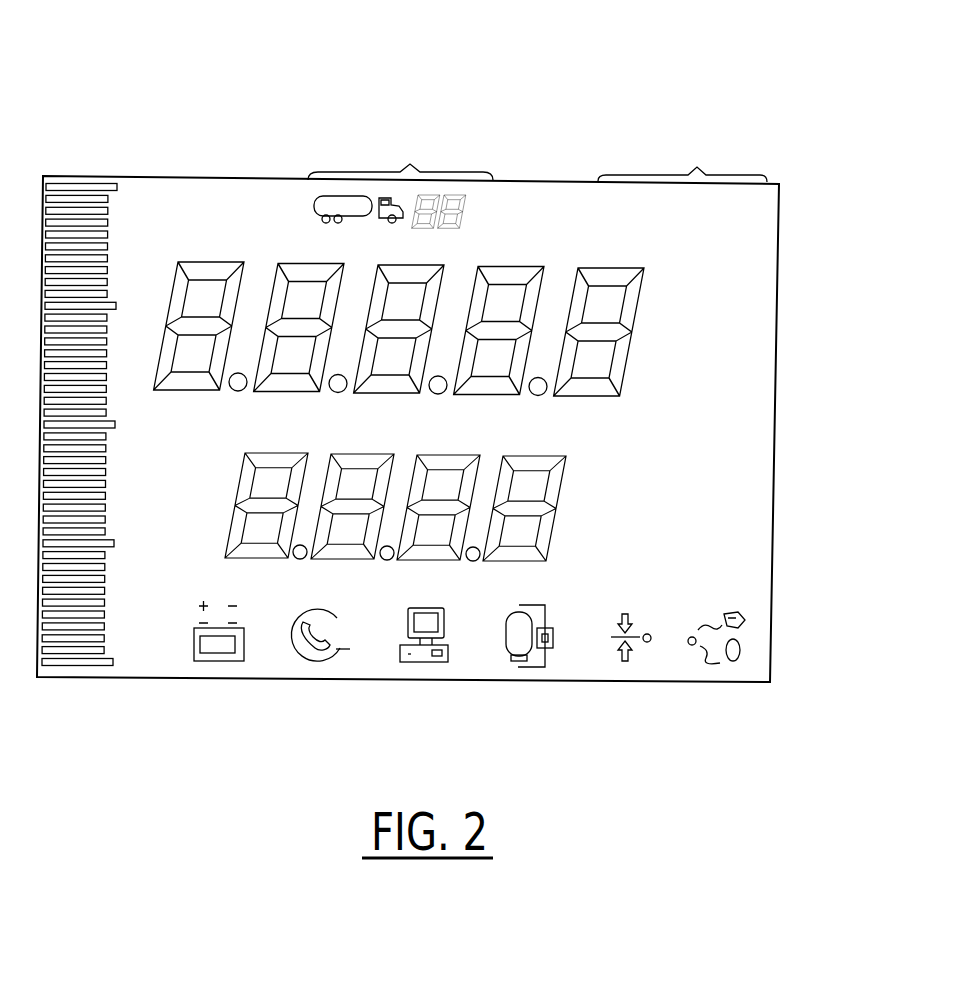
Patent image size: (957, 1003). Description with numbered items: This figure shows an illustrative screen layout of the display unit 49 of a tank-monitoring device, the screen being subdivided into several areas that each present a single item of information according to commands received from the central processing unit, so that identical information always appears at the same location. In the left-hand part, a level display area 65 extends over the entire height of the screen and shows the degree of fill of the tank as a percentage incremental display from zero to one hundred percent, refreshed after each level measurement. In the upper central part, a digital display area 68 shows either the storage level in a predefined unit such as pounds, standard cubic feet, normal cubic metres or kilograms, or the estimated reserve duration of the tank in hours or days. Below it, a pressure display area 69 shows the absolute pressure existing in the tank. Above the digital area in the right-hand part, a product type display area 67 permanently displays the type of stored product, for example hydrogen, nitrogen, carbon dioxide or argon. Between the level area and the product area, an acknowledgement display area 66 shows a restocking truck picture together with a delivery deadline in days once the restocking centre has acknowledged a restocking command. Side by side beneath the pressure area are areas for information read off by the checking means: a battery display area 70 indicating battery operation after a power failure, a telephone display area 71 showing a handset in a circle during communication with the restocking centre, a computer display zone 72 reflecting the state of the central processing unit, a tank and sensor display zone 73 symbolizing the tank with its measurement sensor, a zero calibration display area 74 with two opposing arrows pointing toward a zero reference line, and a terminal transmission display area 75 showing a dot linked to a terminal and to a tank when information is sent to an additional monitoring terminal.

The display unit 49 is at (594, 118).
The level display area 65 is at (68, 171).
The acknowledgement message display area 66 is at (410, 161).
The product type display area 67 is at (703, 162).
The digital display area 68 is at (715, 328).
The pressure display area 69 is at (612, 488).
The battery display area 70 is at (215, 665).
The telephone display area 71 is at (305, 665).
The computer display zone 72 is at (420, 665).
The tank and sensor display zone 73 is at (520, 667).
The zero calibration display area 74 is at (620, 667).
The terminal transmission display area 75 is at (695, 662).